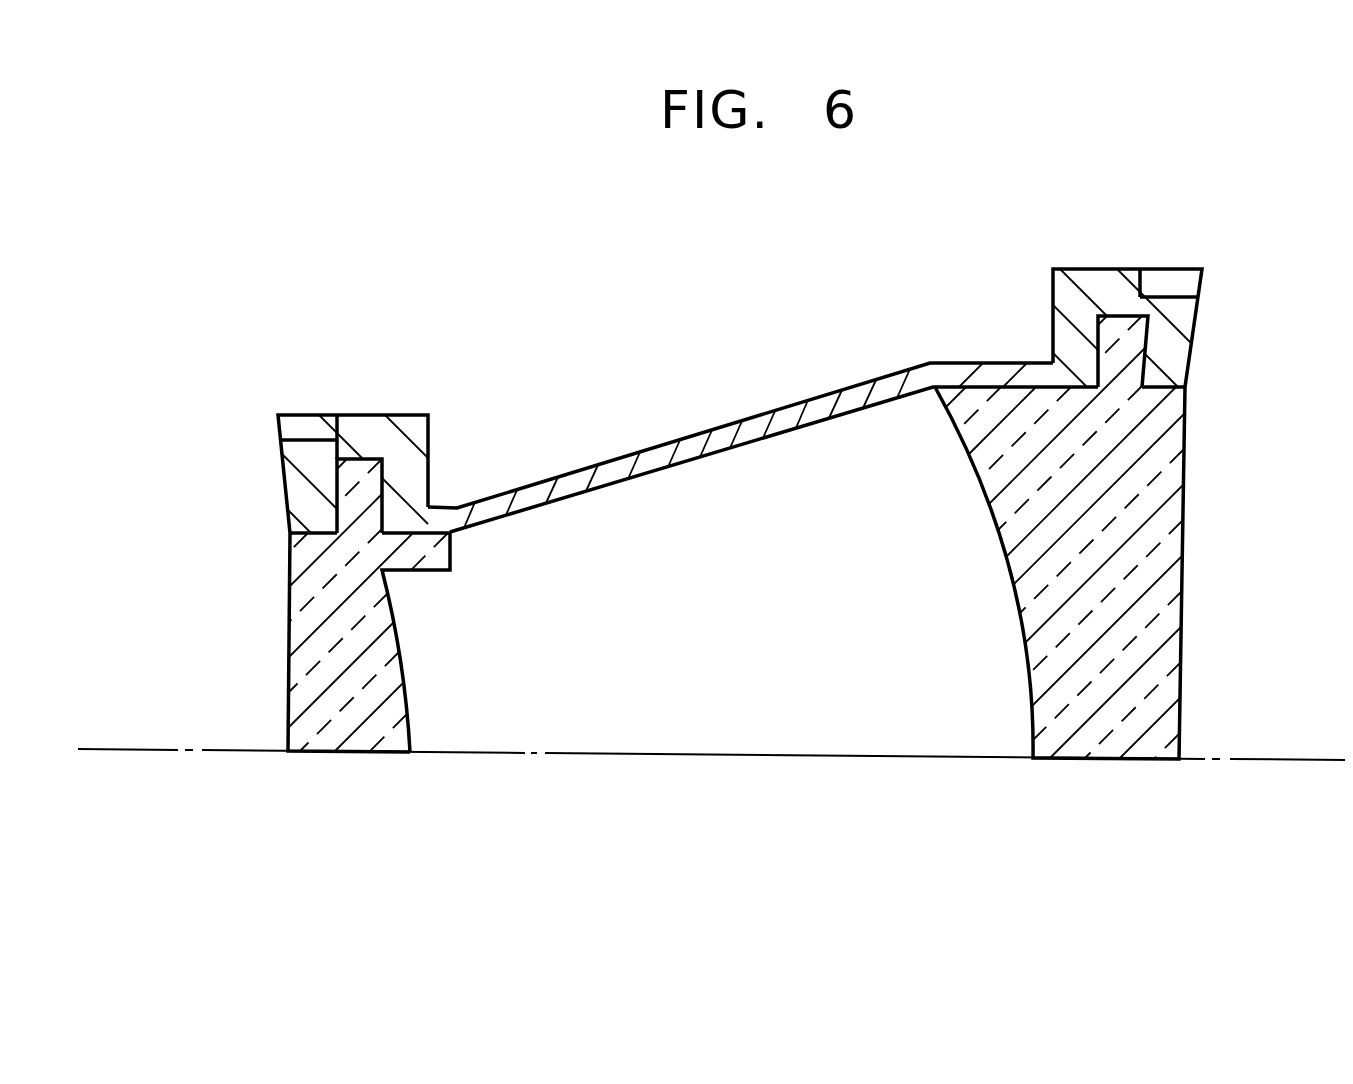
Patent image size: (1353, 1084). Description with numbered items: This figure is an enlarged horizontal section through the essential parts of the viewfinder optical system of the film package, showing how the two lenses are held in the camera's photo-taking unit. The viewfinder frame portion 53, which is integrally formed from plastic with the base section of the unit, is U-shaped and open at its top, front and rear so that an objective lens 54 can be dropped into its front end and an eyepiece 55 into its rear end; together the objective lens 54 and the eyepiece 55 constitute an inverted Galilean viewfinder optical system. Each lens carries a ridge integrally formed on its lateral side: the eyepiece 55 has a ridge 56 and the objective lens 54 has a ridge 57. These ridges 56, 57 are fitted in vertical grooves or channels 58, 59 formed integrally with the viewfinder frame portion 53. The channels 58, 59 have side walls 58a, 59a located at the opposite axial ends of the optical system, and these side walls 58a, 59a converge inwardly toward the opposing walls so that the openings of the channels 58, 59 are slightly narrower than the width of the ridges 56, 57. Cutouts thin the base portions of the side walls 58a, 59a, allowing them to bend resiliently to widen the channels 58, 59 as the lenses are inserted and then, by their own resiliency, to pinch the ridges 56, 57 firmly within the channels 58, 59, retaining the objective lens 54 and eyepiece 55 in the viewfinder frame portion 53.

The viewfinder frame portion 53 is at (723, 383).
The objective lens 54 is at (1100, 778).
The eyepiece 55 is at (338, 772).
The ridge 56 is at (359, 468).
The ridge 57 is at (1122, 323).
The channel 58 is at (420, 462).
The side wall 58a is at (325, 473).
The channel 59 is at (1062, 328).
The side wall 59a is at (1150, 337).